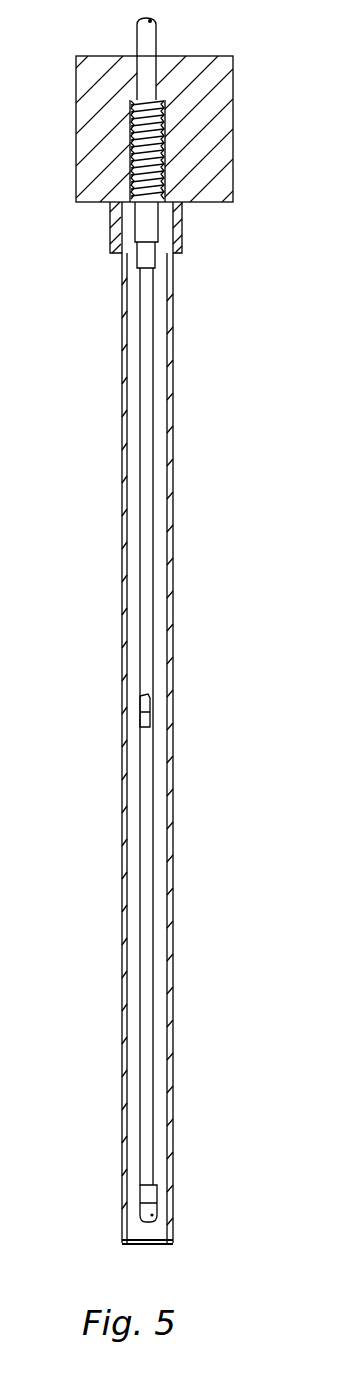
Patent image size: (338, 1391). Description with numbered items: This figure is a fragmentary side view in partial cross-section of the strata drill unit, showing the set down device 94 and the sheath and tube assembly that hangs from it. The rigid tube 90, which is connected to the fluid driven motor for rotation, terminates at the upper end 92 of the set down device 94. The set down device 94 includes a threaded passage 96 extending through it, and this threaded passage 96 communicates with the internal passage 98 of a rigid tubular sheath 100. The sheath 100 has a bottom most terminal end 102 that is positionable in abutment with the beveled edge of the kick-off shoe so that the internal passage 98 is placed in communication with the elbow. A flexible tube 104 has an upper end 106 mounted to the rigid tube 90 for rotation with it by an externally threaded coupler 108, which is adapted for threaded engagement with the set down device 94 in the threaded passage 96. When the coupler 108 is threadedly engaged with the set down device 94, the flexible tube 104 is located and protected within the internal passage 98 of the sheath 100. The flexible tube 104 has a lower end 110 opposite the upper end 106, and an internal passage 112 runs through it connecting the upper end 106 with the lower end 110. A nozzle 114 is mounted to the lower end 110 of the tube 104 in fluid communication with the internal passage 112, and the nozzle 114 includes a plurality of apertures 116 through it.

The rigid tube 90 is at (156, 30).
The upper end of set down device 92 is at (233, 87).
The threaded passage 96 is at (138, 132).
The externally threaded coupler 108 is at (160, 140).
The set down device 94 is at (182, 436).
The internal passage of sheath 98 is at (131, 343).
The rigid tubular sheath 100 is at (173, 506).
The upper end of flexible tube 106 is at (153, 307).
The flexible tube 104 is at (153, 833).
The lower end of flexible tube 110 is at (153, 1132).
The internal passage of flexible tube 112 is at (147, 713).
The nozzle 114 is at (157, 1208).
The apertures 116 is at (153, 1223).
The bottom most terminal end 102 is at (173, 1233).